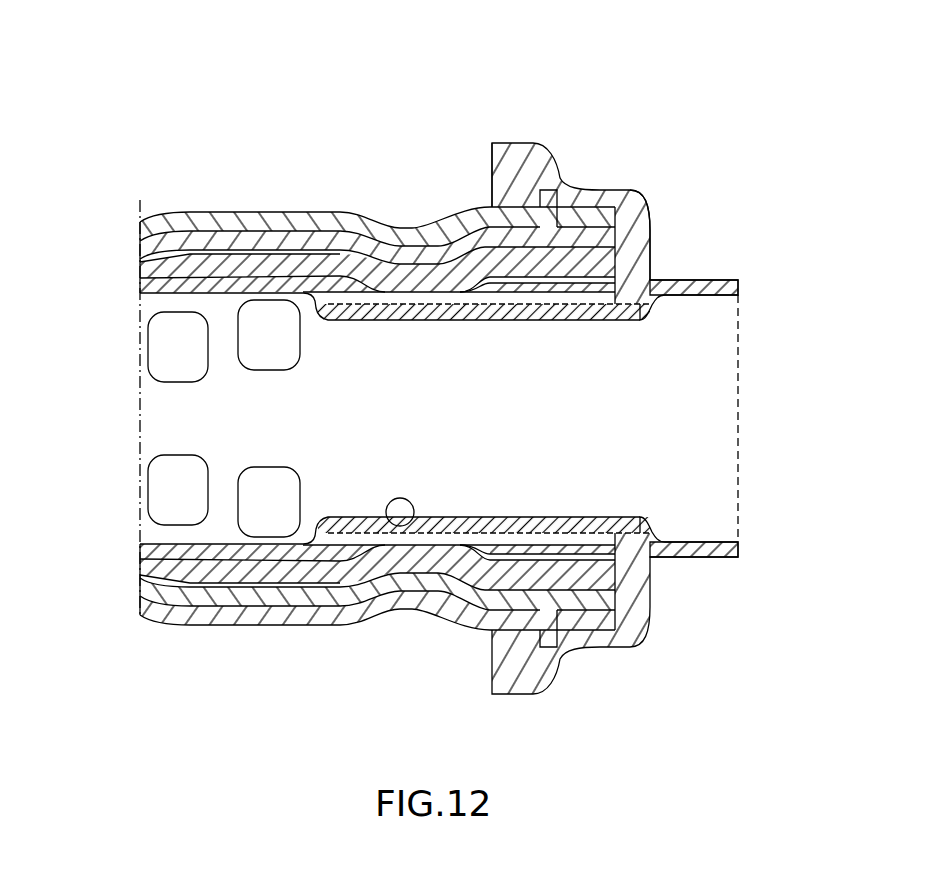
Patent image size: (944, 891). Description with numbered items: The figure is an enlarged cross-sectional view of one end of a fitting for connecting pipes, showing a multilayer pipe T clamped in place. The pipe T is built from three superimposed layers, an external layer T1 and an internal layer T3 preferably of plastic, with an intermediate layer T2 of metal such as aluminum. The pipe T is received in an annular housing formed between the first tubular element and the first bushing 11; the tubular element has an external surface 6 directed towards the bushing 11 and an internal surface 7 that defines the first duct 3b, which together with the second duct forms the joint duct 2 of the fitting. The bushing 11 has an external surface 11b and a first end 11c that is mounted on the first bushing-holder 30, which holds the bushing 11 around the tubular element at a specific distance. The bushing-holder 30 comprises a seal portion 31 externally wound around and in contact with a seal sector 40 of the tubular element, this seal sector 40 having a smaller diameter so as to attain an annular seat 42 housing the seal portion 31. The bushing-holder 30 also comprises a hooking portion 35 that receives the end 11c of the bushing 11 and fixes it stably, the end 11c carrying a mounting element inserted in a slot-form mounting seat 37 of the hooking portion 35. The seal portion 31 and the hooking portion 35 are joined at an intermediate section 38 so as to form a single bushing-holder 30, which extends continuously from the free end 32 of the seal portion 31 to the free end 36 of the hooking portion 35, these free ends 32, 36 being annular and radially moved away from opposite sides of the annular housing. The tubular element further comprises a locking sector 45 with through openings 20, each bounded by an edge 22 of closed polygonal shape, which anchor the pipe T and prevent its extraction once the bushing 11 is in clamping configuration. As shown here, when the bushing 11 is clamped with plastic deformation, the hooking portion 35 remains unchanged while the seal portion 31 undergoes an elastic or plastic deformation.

The joint duct 2 is at (718, 432).
The first duct 3b is at (504, 432).
The external surface 6 is at (331, 537).
The internal surface 7 is at (388, 526).
The first bushing 11 is at (238, 210).
The external surface 11b is at (355, 212).
The first end 11c is at (545, 635).
The through opening 20 is at (148, 457).
The edge 22 is at (245, 497).
The first bushing-holder 30 is at (520, 123).
The seal portion 31 is at (494, 305).
The free end 32 is at (347, 283).
The hooking portion 35 is at (530, 160).
The free end 36 is at (490, 183).
The mounting seat 37 is at (557, 188).
The intermediate section 38 is at (635, 277).
The seal sector 40 is at (397, 333).
The annular seat 42 is at (598, 321).
The locking sector 45 is at (221, 302).
The pipe T is at (140, 597).
The external layer T1 is at (193, 240).
The intermediate layer T2 is at (140, 260).
The internal layer T3 is at (160, 270).